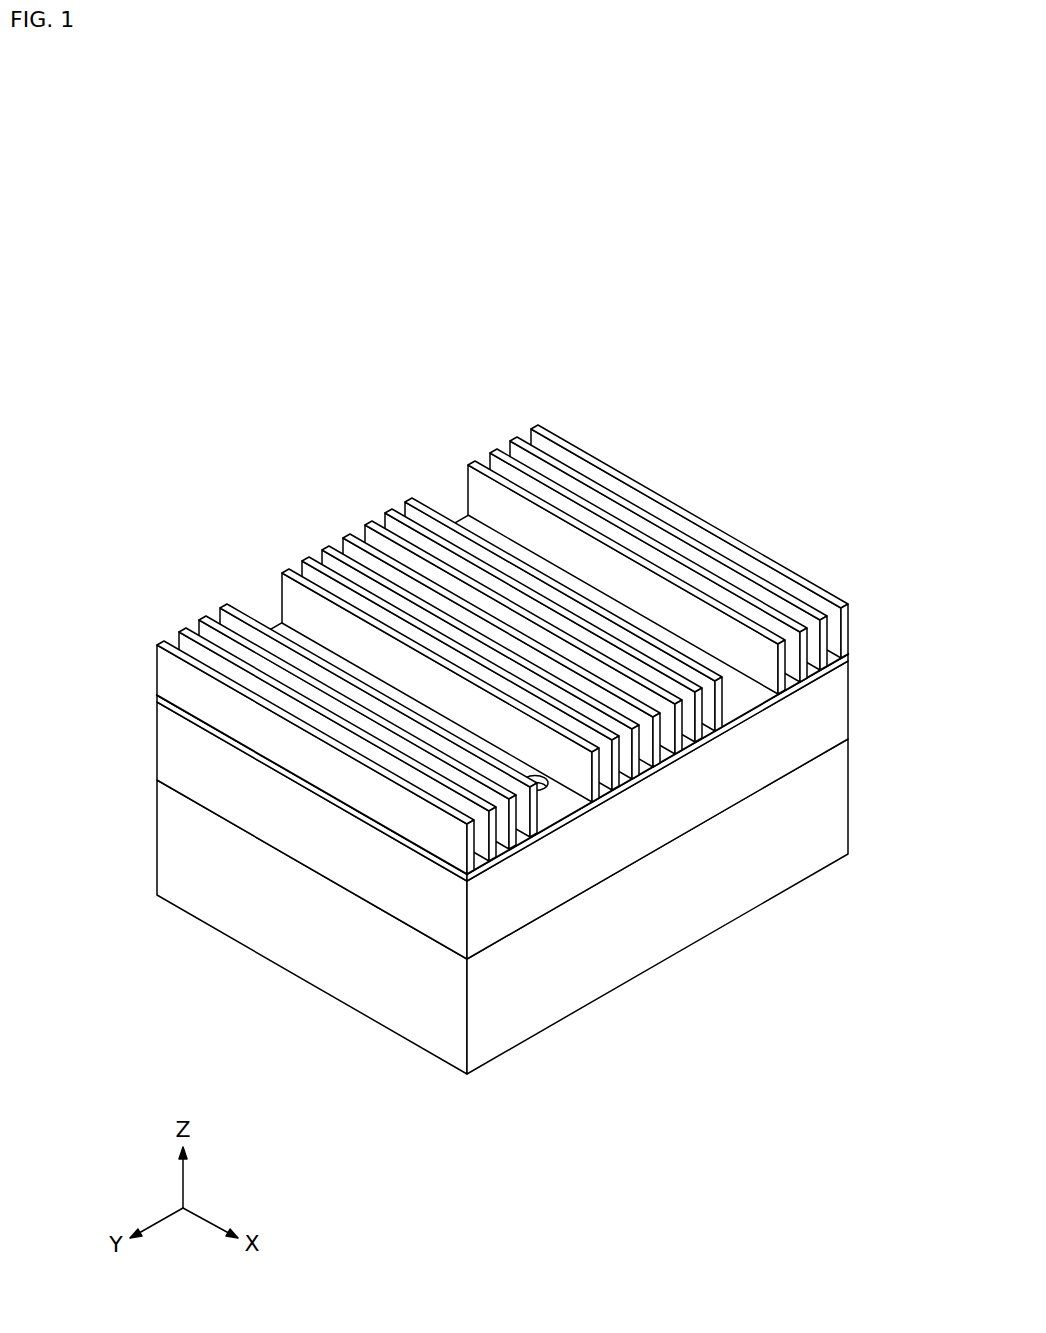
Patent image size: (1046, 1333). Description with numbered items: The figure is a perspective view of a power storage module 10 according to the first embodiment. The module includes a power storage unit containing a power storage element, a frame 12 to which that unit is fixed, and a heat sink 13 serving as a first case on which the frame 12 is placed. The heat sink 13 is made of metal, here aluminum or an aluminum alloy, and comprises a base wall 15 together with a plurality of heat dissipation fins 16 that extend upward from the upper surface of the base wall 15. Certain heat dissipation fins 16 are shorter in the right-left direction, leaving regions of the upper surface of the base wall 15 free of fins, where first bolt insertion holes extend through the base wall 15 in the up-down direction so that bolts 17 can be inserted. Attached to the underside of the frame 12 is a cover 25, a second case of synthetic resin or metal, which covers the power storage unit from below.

The power storage module 10 is at (498, 687).
The frame 12 is at (177, 757).
The heat sink 13 is at (157, 681).
The base wall 15 is at (733, 698).
The heat dissipation fins 16 is at (168, 633).
The bolt 17 is at (548, 788).
The cover 25 is at (220, 892).